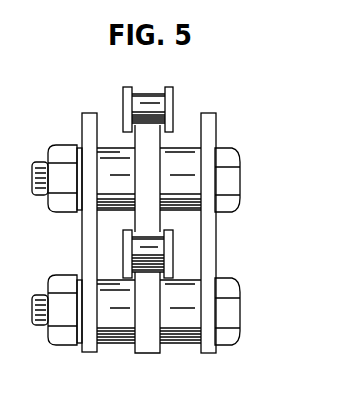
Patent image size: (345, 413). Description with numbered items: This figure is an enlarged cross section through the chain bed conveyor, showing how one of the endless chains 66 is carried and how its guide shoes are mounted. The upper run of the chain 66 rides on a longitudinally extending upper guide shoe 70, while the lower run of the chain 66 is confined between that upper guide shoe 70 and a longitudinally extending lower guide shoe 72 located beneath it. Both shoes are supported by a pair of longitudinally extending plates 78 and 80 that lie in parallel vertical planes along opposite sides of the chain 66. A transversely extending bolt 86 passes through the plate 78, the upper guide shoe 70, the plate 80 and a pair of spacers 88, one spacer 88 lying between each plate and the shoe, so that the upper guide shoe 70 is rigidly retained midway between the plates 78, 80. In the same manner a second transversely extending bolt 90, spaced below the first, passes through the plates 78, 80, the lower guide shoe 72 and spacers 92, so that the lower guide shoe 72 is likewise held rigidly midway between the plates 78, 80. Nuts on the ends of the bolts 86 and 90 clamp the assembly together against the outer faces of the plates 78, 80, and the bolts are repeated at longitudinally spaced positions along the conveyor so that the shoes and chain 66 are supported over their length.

The endless chain 66 is at (177, 93).
The upper guide shoe 70 is at (182, 140).
The lower guide shoe 72 is at (143, 353).
The plate 78 is at (82, 258).
The plate 80 is at (216, 267).
The bolt 86 is at (239, 156).
The spacer 88 is at (110, 213).
The bolt 90 is at (238, 292).
The spacer 92 is at (113, 340).